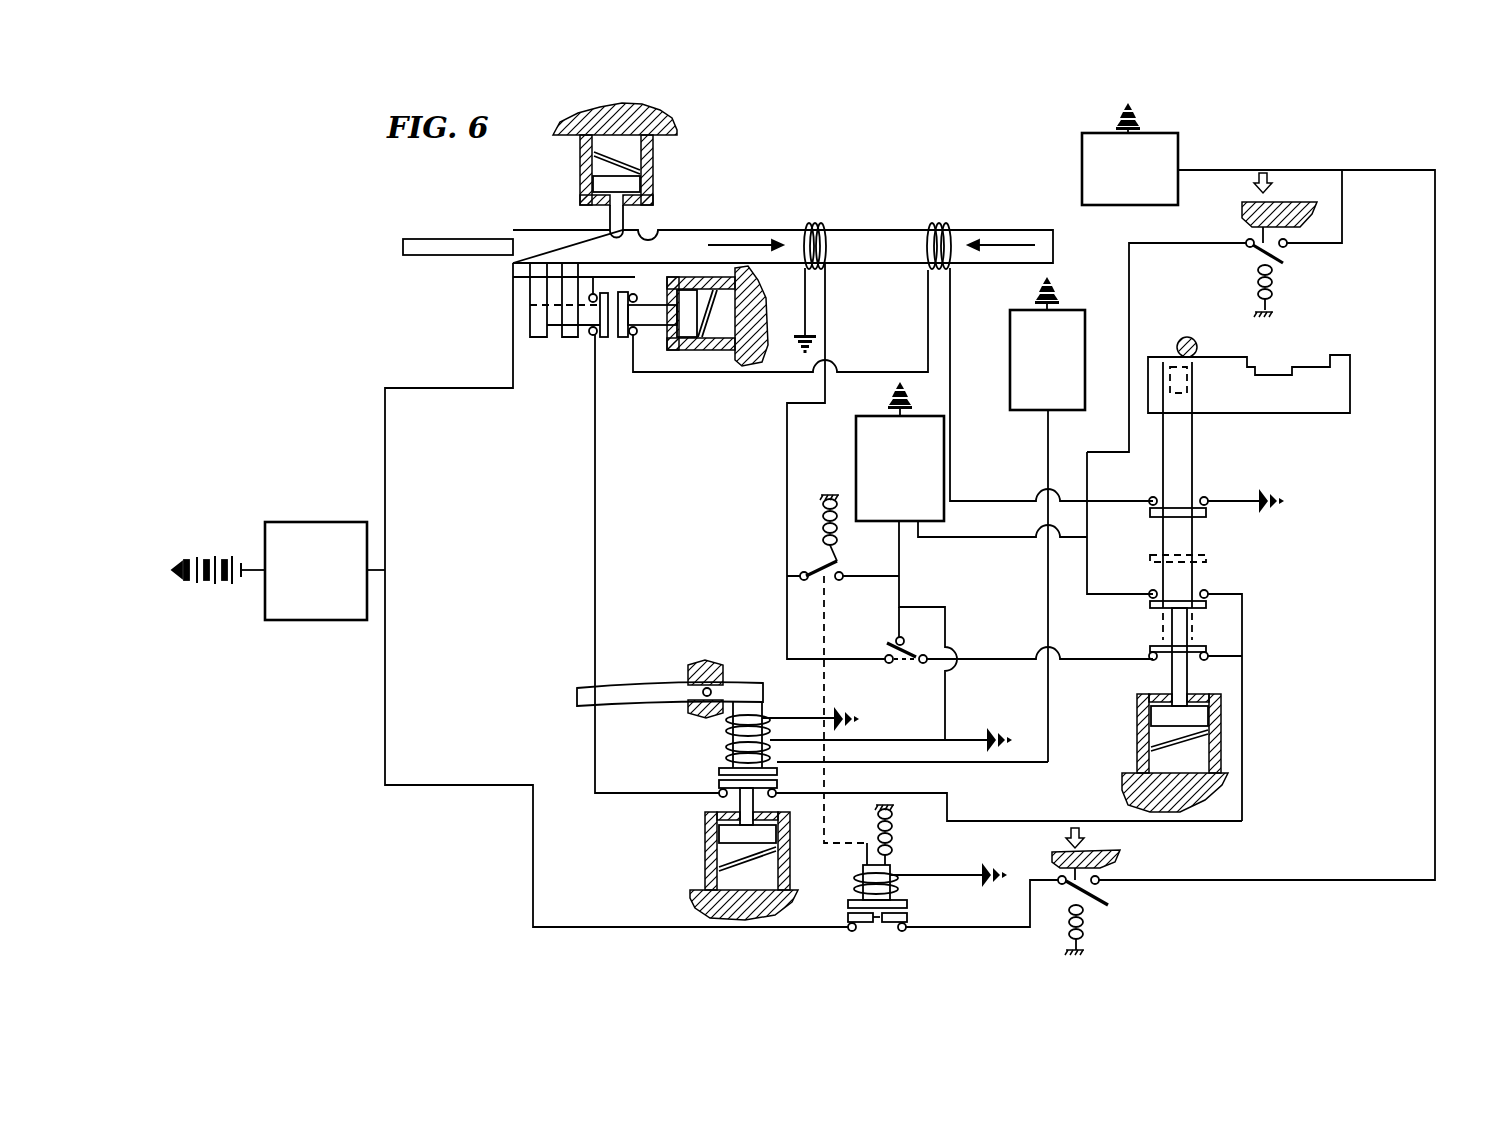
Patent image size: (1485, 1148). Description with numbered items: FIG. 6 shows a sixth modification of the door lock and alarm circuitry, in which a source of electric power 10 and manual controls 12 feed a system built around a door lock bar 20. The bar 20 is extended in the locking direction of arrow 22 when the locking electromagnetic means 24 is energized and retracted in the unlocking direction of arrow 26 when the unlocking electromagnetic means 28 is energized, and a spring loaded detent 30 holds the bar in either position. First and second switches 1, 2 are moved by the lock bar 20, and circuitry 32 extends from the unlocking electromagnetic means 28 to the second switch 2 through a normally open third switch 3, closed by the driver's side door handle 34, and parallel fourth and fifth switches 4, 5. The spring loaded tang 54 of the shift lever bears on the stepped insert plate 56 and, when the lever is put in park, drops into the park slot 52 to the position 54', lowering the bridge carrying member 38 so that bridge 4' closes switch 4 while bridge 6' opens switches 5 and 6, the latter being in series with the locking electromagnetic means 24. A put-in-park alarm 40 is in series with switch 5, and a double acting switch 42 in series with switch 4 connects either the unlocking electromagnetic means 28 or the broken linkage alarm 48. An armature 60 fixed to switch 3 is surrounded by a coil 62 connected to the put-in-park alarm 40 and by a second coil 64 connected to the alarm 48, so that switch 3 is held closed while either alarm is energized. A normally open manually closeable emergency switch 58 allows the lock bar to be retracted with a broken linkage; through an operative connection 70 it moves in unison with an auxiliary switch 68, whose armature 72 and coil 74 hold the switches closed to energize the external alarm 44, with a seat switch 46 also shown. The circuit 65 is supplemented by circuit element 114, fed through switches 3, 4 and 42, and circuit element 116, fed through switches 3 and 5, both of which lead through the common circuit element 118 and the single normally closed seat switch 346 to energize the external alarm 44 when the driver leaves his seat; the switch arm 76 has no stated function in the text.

The first switch 1 is at (636, 296).
The second switch 2 is at (590, 334).
The third normally open switch 3 is at (777, 772).
The fourth switch 4 is at (1175, 667).
The bridge 4' is at (1215, 656).
The fifth switch 5 is at (1207, 592).
The switch 6 is at (1216, 487).
The bridge 6' is at (1240, 535).
The source of electric power 10 is at (241, 558).
The manual controls 12 is at (317, 522).
The door lock bar 20 is at (882, 228).
The arrow 22 is at (1007, 243).
The locking electromagnetic means 24 is at (940, 223).
The arrow 26 is at (735, 230).
The unlocking electromagnetic means 28 is at (815, 223).
The spring loaded detent 30 is at (610, 218).
The circuitry 32 is at (594, 503).
The driver's side door handle 34 is at (642, 688).
The bridge carrying member 38 is at (1165, 563).
The put-in-park alarm 40 is at (1078, 312).
The double acting switch 42 is at (928, 654).
The external alarm 44 is at (1172, 133).
The seat switch 46 is at (1108, 907).
The broken/maladjusted linkage alarm 48 is at (918, 523).
The park slot 52 is at (1160, 381).
The tang 54 is at (1203, 338).
The tang in park position 54' is at (1201, 383).
The insert plate 56 is at (1350, 365).
The normally open manually closeable switch 58 is at (814, 562).
The armature 60 is at (748, 747).
The electromagnetic coil 62 is at (727, 758).
The second coil 64 is at (726, 730).
The circuit 65 is at (387, 722).
The auxiliary switch 68 is at (905, 907).
The operative connection 70 is at (824, 686).
The armature 72 is at (863, 893).
The electromagnetic coil 74 is at (892, 872).
The switch arm 76 is at (899, 617).
The circuit element 114 is at (995, 539).
The circuit element 116 is at (1087, 565).
The circuit element 118 is at (1185, 246).
The seat switch 346 is at (1290, 262).